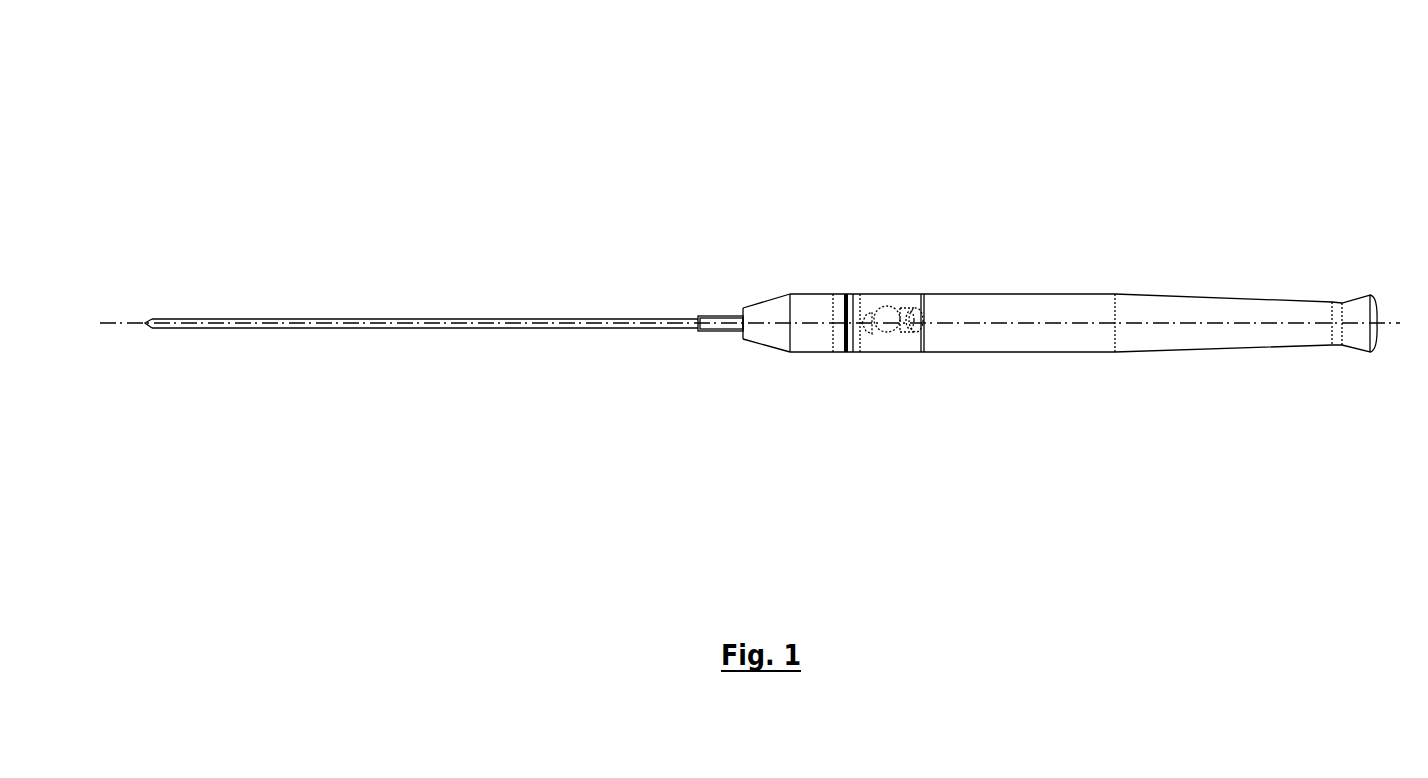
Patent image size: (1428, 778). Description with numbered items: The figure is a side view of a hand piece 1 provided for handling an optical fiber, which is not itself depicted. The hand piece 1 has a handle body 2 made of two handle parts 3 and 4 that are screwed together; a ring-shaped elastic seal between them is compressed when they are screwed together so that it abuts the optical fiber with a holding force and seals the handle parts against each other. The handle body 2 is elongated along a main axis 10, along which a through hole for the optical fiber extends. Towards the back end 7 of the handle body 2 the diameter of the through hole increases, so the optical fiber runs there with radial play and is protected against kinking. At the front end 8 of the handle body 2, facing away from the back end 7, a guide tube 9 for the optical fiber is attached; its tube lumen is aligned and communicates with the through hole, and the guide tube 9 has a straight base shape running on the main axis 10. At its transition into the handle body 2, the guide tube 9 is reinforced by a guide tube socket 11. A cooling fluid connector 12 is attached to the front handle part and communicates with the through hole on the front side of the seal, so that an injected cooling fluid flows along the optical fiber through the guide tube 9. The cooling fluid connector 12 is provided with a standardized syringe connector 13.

The hand piece 1 is at (1057, 165).
The handle body 2 is at (813, 283).
The handle part 3 is at (760, 308).
The handle part 4 is at (1165, 310).
The back end 7 is at (1379, 302).
The front end 8 is at (740, 338).
The guide tube 9 is at (460, 319).
The main axis 10 is at (123, 322).
The guide tube socket 11 is at (712, 313).
The cooling fluid connector 12 is at (890, 302).
The standardized syringe connector 13 is at (918, 300).